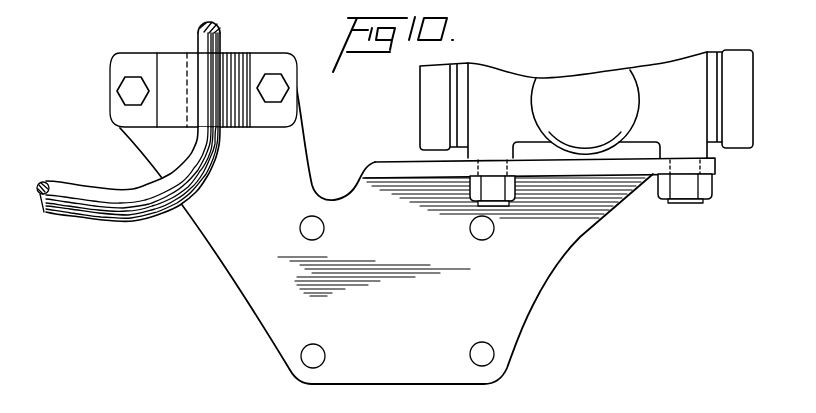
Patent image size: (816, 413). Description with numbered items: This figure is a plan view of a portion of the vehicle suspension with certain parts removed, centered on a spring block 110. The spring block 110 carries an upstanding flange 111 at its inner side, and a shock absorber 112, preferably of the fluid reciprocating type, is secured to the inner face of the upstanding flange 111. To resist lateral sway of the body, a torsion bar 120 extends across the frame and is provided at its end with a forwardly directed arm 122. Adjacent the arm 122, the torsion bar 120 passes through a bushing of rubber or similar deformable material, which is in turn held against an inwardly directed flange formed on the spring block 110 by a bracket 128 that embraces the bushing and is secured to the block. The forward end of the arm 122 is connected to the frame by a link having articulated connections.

The spring block 110 is at (254, 277).
The upstanding flange 111 is at (613, 166).
The shock absorber 112 is at (516, 86).
The torsion bar 120 is at (198, 35).
The arm 122 is at (68, 203).
The bracket 128 is at (239, 64).